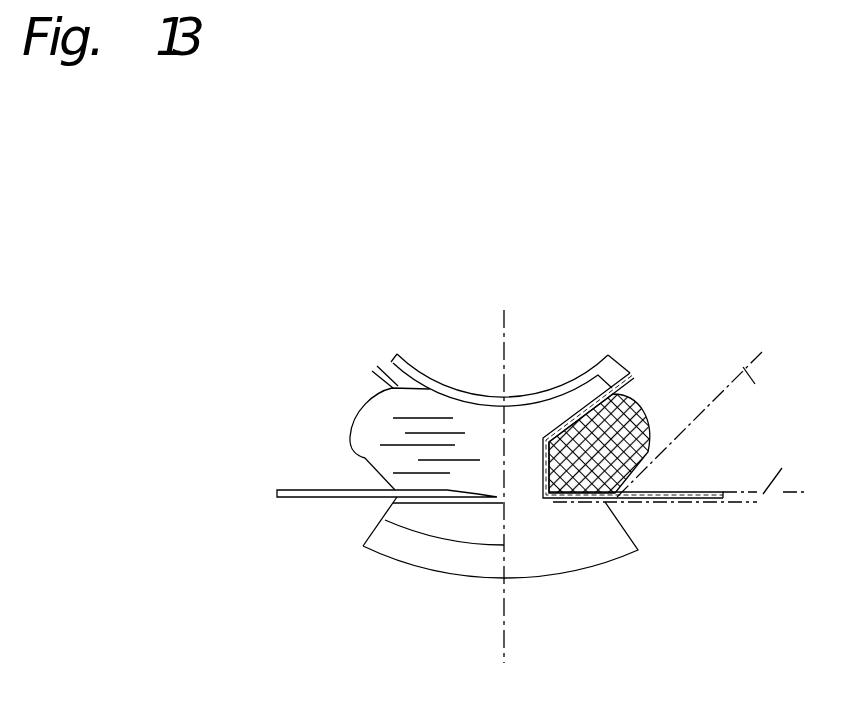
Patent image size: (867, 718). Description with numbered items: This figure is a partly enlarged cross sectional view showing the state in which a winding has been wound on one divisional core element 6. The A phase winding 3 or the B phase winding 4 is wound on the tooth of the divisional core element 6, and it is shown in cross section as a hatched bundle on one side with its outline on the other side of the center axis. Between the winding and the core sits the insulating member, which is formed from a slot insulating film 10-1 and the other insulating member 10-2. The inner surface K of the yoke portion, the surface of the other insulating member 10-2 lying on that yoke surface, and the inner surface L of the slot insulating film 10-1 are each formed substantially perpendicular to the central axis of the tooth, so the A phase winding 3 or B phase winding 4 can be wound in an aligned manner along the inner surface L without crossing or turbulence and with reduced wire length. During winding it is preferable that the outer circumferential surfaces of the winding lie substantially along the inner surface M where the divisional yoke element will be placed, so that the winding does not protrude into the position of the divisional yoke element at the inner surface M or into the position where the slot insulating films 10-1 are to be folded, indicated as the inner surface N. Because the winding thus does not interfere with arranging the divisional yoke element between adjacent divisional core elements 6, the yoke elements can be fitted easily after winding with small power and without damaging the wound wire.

The other insulating member 10-2 is at (553, 437).
The slot insulating film 10-1 is at (633, 370).
The A phase winding 3 is at (385, 422).
The B phase winding 4 is at (387, 442).
The divisional core element 6 is at (622, 547).
The inner surface of the divisional yoke element M is at (703, 425).
The inner surface where slot insulating films are folded N is at (710, 397).
The inner surface of the slot insulating film L is at (683, 476).
The inner surface of the yoke portion K is at (702, 498).